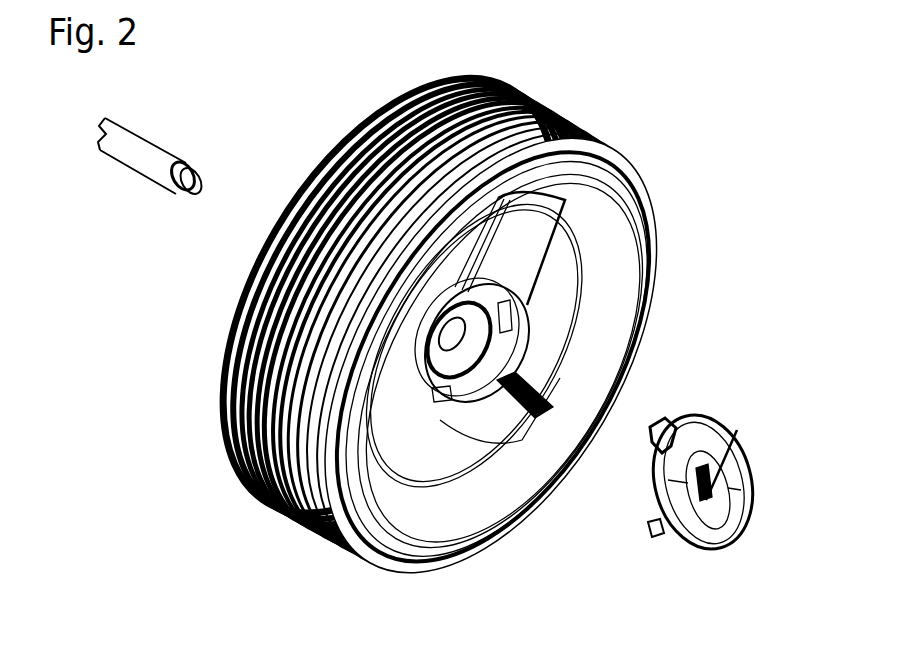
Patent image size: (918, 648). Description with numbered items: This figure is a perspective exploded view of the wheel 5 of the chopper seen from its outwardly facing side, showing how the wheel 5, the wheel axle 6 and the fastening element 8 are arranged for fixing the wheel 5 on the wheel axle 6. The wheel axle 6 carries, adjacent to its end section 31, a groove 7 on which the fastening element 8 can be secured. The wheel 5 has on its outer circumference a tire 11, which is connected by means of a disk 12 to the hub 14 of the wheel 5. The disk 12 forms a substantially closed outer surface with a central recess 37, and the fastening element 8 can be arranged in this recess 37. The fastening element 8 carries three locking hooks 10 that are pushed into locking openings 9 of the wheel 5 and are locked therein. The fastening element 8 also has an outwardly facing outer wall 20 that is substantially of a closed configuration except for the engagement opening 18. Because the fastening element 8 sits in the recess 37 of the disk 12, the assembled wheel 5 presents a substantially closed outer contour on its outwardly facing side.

The wheel 5 is at (439, 326).
The tire 11 is at (545, 100).
The disk 12 is at (386, 373).
The hub 14 is at (498, 354).
The central recess 37 is at (522, 320).
The locking openings 9 is at (518, 298).
The fastening element 8 is at (711, 459).
The outer wall 20 is at (752, 460).
The engagement opening 18 is at (700, 497).
The locking hooks 10 is at (651, 450).
The wheel axle 6 is at (178, 160).
The groove 7 is at (190, 166).
The end section 31 is at (200, 181).